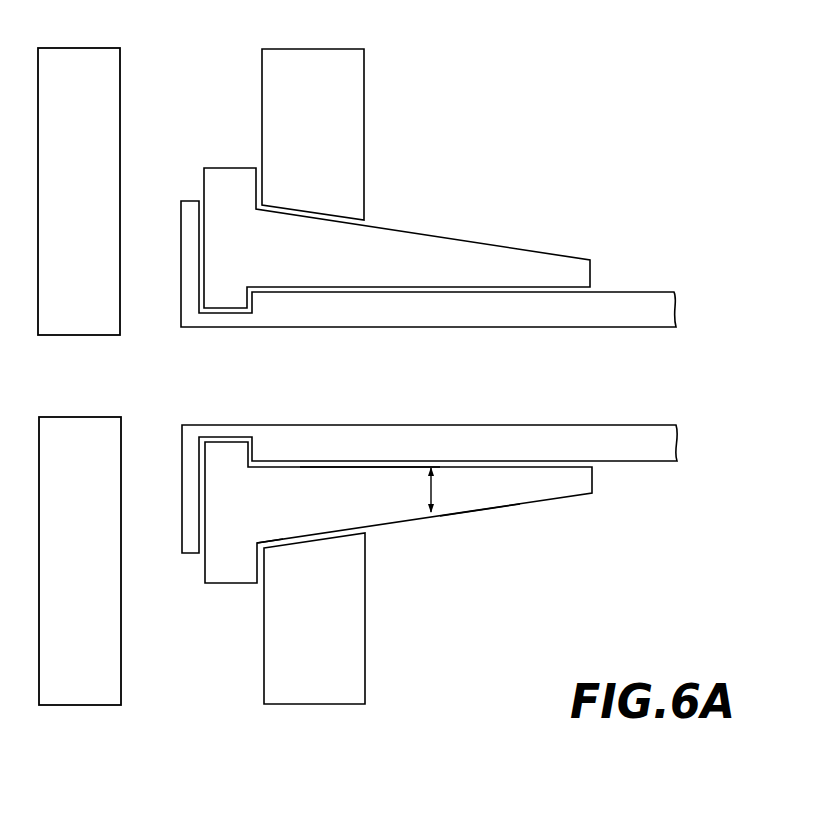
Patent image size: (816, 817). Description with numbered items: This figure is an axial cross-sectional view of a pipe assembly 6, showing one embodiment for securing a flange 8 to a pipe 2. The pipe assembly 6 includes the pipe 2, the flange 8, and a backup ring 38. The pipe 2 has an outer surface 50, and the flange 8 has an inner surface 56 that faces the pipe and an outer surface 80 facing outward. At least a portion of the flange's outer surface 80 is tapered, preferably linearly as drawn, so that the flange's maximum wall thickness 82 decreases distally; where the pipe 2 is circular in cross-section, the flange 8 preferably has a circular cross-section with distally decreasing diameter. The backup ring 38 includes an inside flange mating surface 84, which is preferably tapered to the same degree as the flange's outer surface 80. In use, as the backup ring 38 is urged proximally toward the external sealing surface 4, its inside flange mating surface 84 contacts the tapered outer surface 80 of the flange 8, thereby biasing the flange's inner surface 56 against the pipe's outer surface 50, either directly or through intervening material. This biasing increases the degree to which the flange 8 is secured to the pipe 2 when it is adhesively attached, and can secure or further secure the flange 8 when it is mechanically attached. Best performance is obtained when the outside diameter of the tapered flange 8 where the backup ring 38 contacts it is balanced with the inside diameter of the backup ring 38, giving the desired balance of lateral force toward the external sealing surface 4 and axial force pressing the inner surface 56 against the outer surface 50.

The pipe 2 is at (659, 302).
The external sealing surface 4 is at (120, 77).
The pipe assembly 6 is at (438, 603).
The flange 8 is at (212, 566).
The backup ring 38 is at (316, 695).
The outer surface 50 is at (653, 462).
The inner surface 56 is at (372, 467).
The outer surface 80 is at (470, 512).
The maximum wall thickness 82 is at (431, 492).
The inside flange mating surface 84 is at (285, 543).